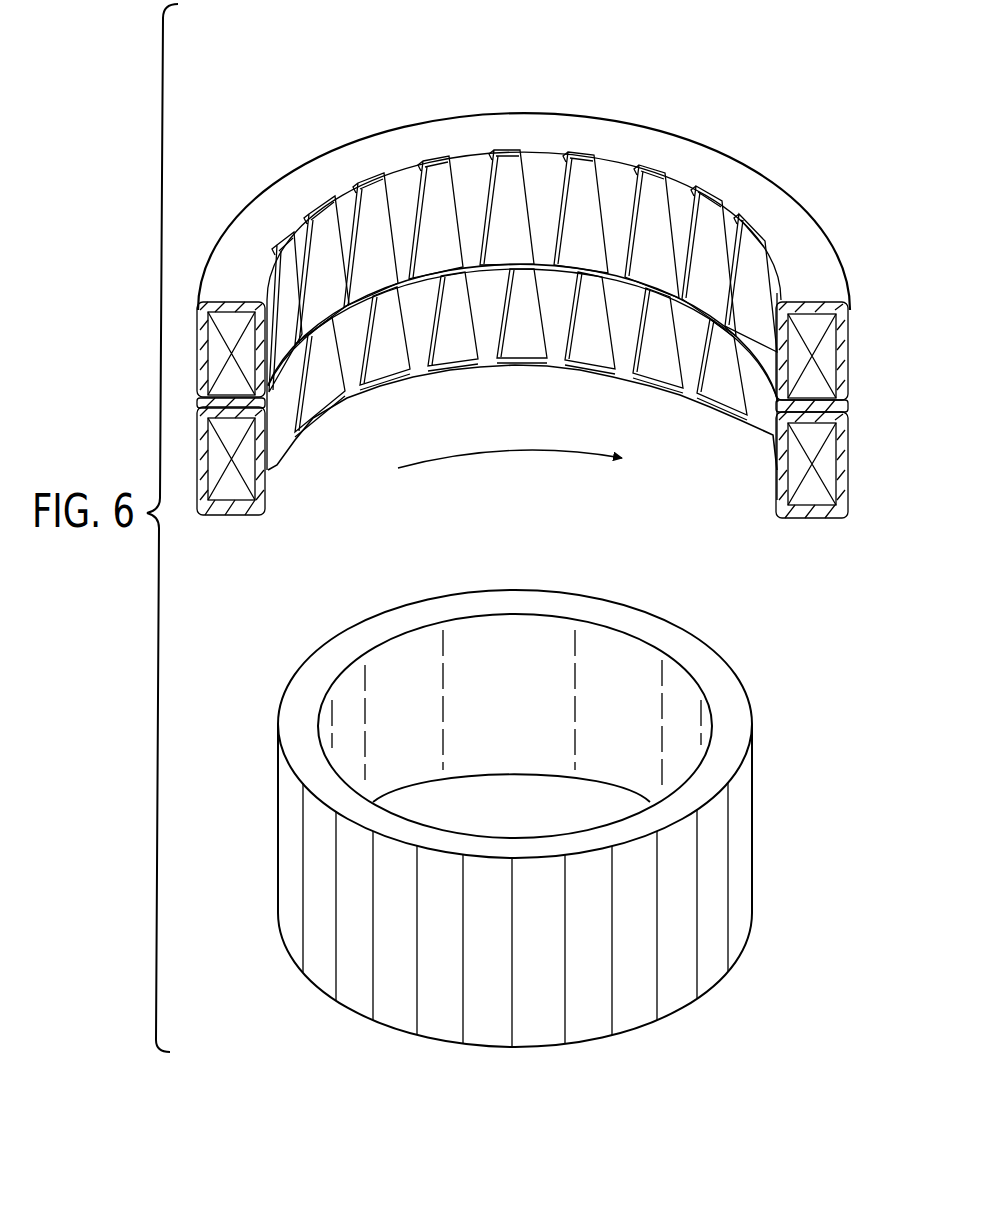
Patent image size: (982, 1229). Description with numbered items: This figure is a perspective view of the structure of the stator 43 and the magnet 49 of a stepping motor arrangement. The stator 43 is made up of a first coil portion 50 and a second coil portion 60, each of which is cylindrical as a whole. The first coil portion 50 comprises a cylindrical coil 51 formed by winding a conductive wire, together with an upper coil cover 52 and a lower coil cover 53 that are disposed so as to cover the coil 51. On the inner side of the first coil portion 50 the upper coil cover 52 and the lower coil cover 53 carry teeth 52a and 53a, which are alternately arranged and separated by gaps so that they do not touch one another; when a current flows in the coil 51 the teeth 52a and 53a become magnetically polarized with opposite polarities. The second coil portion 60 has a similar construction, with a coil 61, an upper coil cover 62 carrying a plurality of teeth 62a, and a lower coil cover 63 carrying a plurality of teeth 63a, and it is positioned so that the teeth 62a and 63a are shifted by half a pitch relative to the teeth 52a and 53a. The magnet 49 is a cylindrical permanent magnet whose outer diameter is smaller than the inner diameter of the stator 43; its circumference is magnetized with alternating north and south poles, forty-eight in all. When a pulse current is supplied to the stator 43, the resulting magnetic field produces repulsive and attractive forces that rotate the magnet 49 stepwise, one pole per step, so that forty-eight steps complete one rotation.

The stator 43 is at (622, 96).
The magnet 49 is at (752, 838).
The first coil portion 50 is at (852, 316).
The coil 51 is at (813, 328).
The upper coil cover 52 is at (237, 304).
The teeth 52a is at (413, 190).
The lower coil cover 53 is at (262, 403).
The teeth 53a is at (367, 203).
The second coil portion 60 is at (851, 516).
The coil 61 is at (808, 500).
The upper coil cover 62 is at (262, 455).
The teeth 62a is at (493, 368).
The lower coil cover 63 is at (222, 511).
The teeth 63a is at (446, 352).